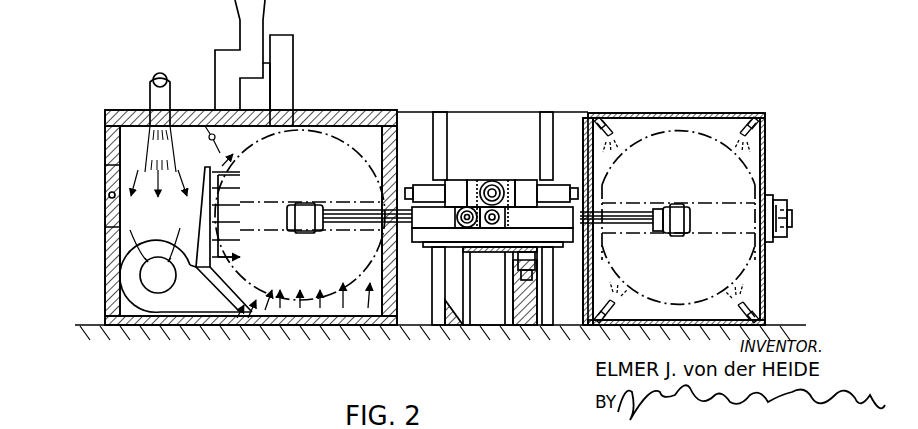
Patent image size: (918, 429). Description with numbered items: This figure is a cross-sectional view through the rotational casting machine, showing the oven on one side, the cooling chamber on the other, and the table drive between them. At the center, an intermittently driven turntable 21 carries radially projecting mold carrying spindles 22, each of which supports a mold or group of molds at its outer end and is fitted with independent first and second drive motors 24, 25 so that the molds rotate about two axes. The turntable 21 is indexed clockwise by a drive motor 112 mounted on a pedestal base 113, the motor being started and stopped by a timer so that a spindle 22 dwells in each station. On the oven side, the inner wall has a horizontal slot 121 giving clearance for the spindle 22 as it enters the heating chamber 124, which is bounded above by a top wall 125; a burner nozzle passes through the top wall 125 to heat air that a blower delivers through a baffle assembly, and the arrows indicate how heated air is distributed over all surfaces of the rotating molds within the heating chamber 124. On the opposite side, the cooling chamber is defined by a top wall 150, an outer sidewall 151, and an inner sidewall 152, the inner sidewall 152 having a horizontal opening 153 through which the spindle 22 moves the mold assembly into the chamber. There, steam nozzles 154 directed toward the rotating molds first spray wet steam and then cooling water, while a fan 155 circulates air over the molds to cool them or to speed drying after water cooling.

The turntable 21 is at (417, 237).
The spindle 22 is at (357, 227).
The first drive motor 24 is at (482, 245).
The second drive motor 25 is at (520, 180).
The drive motor 112 is at (510, 270).
The pedestal base 113 is at (460, 288).
The horizontal slot 121 is at (395, 200).
The heating chamber 124 is at (363, 133).
The top wall 125 is at (310, 110).
The top wall 150 is at (610, 113).
The outer sidewall 151 is at (768, 133).
The inner sidewall 152 is at (585, 133).
The horizontal opening 153 is at (587, 200).
The steam nozzles 154 is at (750, 122).
The fan 155 is at (792, 196).